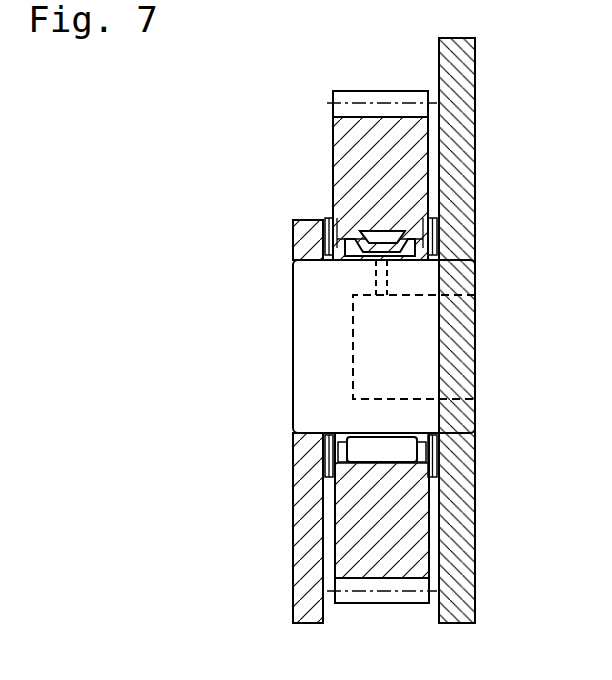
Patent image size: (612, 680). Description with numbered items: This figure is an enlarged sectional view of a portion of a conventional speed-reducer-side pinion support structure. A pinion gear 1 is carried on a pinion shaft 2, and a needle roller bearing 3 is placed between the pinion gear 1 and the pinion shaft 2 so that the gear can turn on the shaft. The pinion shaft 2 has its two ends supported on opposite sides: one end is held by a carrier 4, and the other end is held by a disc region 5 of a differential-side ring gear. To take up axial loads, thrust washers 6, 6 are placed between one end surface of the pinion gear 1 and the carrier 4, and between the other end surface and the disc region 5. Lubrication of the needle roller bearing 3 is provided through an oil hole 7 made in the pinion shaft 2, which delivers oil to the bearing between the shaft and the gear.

The pinion gear 1 is at (352, 155).
The pinion shaft 2 is at (305, 334).
The needle roller bearing 3 is at (383, 226).
The carrier 4 is at (305, 551).
The disc region 5 is at (462, 90).
The thrust washer 6 is at (327, 240).
The oil hole 7 is at (441, 295).